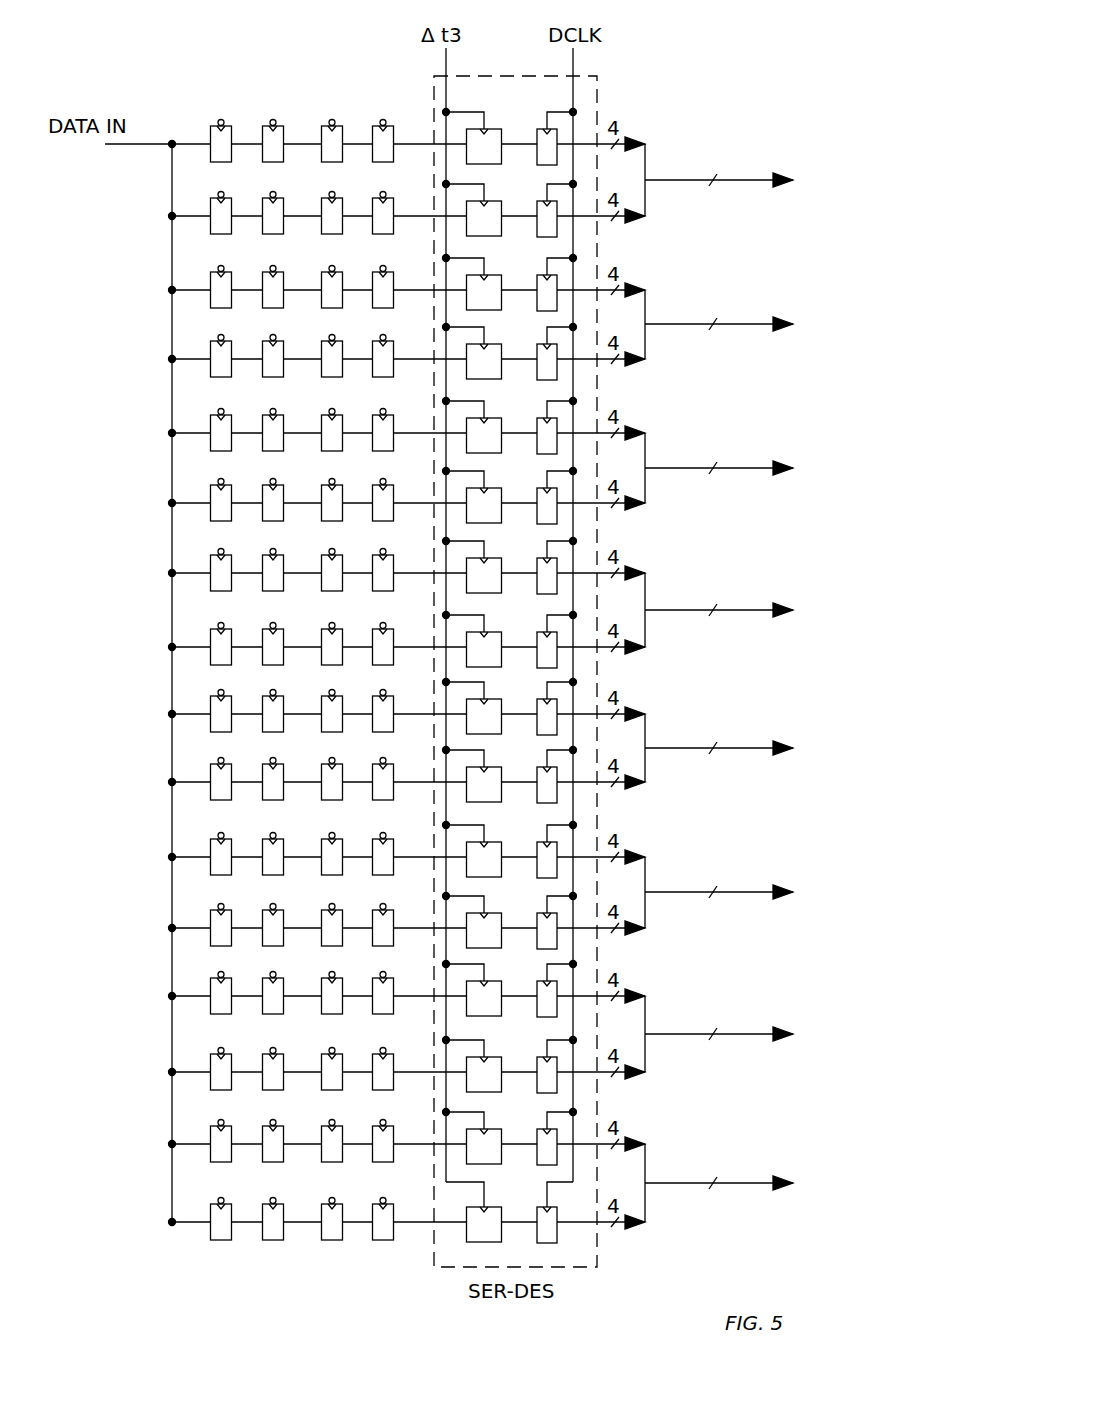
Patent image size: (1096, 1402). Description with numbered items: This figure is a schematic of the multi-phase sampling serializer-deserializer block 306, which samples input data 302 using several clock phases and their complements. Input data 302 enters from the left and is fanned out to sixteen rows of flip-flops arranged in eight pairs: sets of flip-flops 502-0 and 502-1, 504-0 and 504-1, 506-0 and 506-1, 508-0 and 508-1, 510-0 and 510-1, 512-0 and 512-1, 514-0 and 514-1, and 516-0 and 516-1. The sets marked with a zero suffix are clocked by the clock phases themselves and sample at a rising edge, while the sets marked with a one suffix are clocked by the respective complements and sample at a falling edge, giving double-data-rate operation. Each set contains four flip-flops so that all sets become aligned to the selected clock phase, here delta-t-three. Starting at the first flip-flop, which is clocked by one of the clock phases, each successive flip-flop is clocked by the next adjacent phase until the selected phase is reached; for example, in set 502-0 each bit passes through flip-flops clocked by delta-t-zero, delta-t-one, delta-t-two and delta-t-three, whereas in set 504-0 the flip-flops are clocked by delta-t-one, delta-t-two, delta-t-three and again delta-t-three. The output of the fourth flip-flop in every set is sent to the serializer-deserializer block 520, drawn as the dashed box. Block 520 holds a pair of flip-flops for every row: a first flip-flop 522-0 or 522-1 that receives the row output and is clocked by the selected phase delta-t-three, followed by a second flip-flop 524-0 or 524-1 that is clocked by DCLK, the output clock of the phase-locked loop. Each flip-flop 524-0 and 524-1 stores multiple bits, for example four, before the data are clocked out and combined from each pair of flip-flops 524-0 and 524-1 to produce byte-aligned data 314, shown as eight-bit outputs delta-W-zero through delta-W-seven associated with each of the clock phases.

The input data 302 is at (106, 148).
The multi-phase sampling serializer-deserializer block 306 is at (764, 52).
The byte-aligned data 314 is at (852, 1292).
The set of flip-flops 502-0 is at (157, 171).
The set of flip-flops 502-1 is at (157, 186).
The set of flip-flops 504-0 is at (157, 260).
The set of flip-flops 504-1 is at (157, 329).
The set of flip-flops 506-0 is at (157, 403).
The set of flip-flops 506-1 is at (157, 473).
The set of flip-flops 508-0 is at (157, 543).
The set of flip-flops 508-1 is at (157, 617).
The set of flip-flops 510-0 is at (157, 684).
The set of flip-flops 510-1 is at (157, 752).
The set of flip-flops 512-0 is at (157, 827).
The set of flip-flops 512-1 is at (157, 898).
The set of flip-flops 514-0 is at (157, 966).
The set of flip-flops 514-1 is at (157, 1042).
The set of flip-flops 516-0 is at (157, 1114).
The set of flip-flops 516-1 is at (157, 1192).
The serializer-deserializer block 520 is at (597, 92).
The flip-flop 522-0 is at (484, 128).
The flip-flop 522-1 is at (484, 201).
The flip-flop 524-0 is at (557, 129).
The flip-flop 524-1 is at (560, 236).